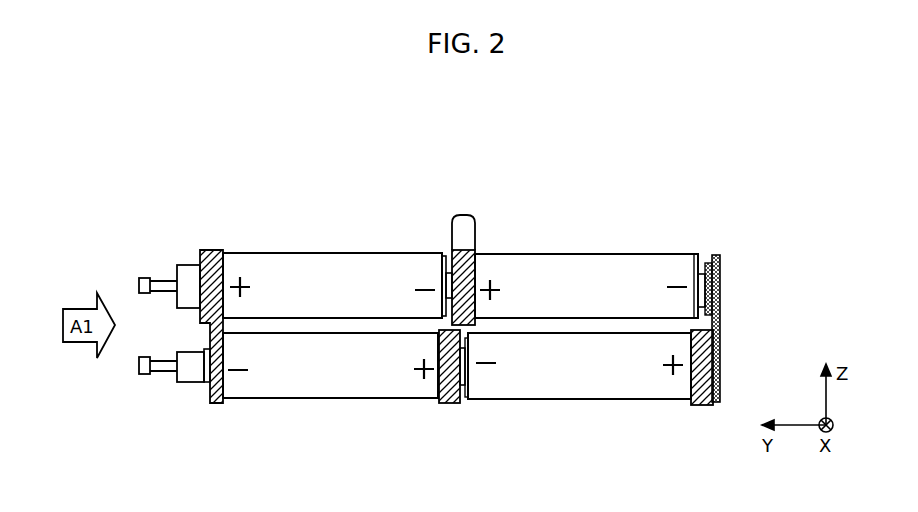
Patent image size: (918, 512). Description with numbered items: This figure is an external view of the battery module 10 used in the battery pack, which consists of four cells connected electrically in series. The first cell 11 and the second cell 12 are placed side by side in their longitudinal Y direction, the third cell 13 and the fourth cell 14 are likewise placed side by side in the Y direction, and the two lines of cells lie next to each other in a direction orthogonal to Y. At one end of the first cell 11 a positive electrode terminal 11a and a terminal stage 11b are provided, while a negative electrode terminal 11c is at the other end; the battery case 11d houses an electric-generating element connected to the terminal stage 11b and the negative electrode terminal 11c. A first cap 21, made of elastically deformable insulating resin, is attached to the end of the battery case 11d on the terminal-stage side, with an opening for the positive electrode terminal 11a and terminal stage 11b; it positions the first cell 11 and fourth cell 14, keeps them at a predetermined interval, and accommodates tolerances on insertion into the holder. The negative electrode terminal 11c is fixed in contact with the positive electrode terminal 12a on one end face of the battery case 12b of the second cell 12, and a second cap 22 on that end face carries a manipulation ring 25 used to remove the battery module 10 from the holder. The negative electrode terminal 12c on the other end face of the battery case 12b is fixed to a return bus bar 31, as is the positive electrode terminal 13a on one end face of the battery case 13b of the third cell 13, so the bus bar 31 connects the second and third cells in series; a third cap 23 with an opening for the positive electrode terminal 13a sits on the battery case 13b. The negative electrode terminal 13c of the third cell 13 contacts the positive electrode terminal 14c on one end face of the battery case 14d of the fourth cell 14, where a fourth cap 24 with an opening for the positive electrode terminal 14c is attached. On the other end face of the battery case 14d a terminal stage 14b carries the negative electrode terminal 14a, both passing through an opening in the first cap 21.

The battery module 10 is at (747, 260).
The first cell 11 is at (343, 300).
The positive electrode terminal 11a is at (176, 257).
The terminal stage 11b is at (188, 272).
The negative electrode terminal 11c is at (443, 279).
The battery case 11d is at (324, 252).
The second cell 12 is at (595, 301).
The positive electrode terminal 12a is at (450, 273).
The battery case 12b is at (580, 253).
The negative electrode terminal 12c is at (703, 276).
The third cell 13 is at (598, 381).
The positive electrode terminal 13a is at (691, 365).
The battery case 13b is at (580, 402).
The negative electrode terminal 13c is at (469, 368).
The fourth cell 14 is at (343, 381).
The negative electrode terminal 14a is at (176, 383).
The terminal stage 14b is at (190, 370).
The positive electrode terminal 14c is at (465, 372).
The battery case 14d is at (330, 400).
The first cap 21 is at (208, 250).
The second cap 22 is at (478, 278).
The third cap 23 is at (702, 406).
The fourth cap 24 is at (441, 404).
The manipulation ring 25 is at (465, 228).
The bus bar 31 is at (721, 321).